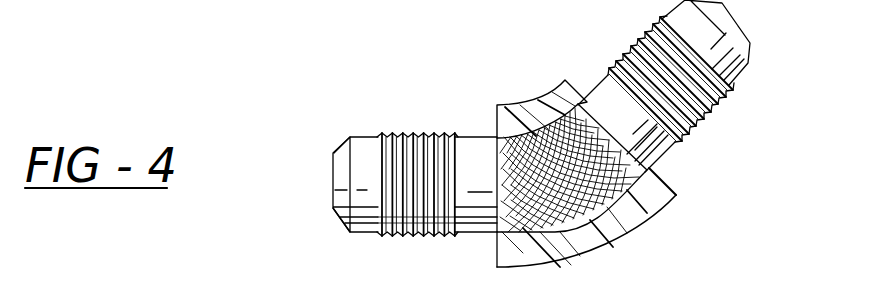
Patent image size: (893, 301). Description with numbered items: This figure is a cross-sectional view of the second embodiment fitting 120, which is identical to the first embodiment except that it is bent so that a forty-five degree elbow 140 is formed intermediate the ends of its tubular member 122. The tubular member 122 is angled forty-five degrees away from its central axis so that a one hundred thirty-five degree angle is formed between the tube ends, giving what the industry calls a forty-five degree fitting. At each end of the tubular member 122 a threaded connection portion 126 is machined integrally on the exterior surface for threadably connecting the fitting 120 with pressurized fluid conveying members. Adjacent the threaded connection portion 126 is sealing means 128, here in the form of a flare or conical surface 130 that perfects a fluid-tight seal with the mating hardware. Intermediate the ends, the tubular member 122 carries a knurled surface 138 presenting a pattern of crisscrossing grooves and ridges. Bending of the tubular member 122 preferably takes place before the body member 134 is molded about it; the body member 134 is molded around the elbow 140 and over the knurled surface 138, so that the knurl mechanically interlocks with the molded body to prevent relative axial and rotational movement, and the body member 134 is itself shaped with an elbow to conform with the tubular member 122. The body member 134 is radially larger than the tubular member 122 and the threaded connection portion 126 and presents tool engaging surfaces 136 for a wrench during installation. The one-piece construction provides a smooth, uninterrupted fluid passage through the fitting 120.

The fitting 120 is at (517, 72).
The tubular member 122 is at (595, 86).
The threaded connection portion 126 is at (413, 132).
The sealing means 128 is at (324, 172).
The flare or conical surface 130 is at (343, 212).
The body member 134 is at (666, 192).
The tool engaging surfaces 136 is at (438, 69).
The knurled surface 138 is at (641, 224).
The 45 degree elbow 140 is at (497, 248).